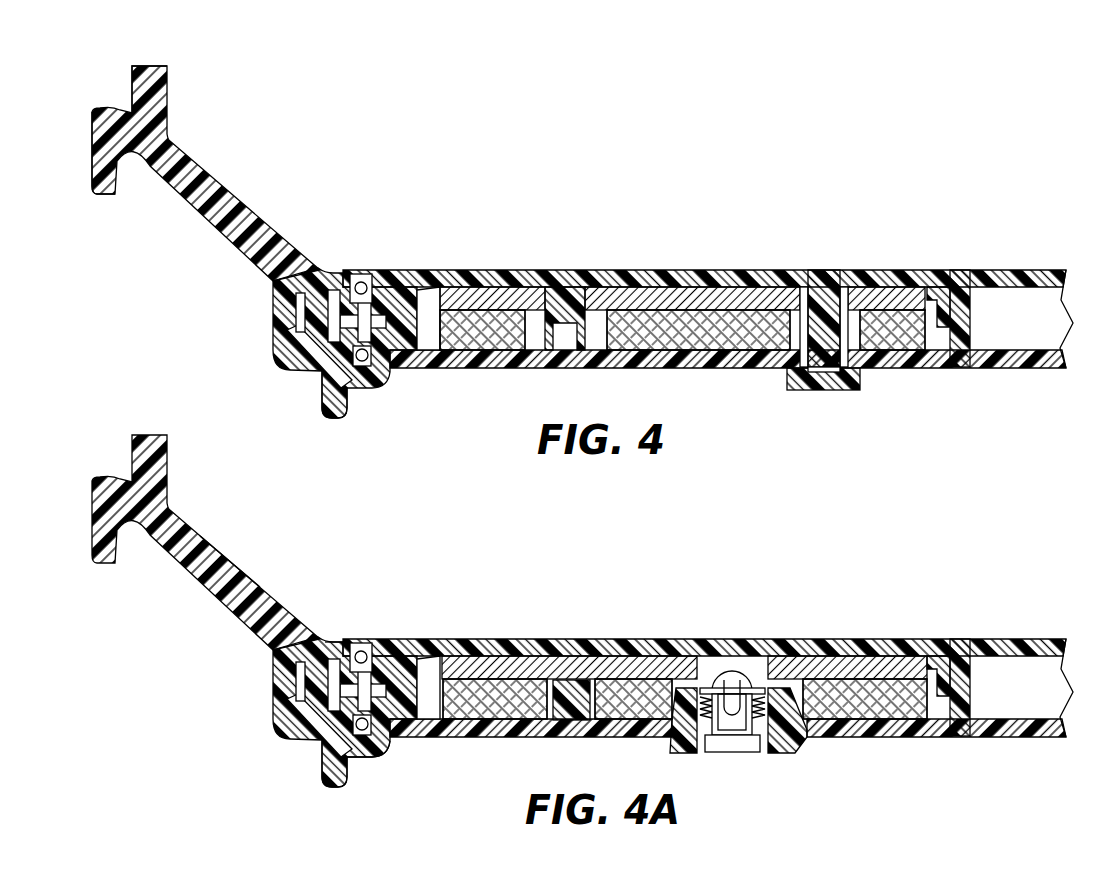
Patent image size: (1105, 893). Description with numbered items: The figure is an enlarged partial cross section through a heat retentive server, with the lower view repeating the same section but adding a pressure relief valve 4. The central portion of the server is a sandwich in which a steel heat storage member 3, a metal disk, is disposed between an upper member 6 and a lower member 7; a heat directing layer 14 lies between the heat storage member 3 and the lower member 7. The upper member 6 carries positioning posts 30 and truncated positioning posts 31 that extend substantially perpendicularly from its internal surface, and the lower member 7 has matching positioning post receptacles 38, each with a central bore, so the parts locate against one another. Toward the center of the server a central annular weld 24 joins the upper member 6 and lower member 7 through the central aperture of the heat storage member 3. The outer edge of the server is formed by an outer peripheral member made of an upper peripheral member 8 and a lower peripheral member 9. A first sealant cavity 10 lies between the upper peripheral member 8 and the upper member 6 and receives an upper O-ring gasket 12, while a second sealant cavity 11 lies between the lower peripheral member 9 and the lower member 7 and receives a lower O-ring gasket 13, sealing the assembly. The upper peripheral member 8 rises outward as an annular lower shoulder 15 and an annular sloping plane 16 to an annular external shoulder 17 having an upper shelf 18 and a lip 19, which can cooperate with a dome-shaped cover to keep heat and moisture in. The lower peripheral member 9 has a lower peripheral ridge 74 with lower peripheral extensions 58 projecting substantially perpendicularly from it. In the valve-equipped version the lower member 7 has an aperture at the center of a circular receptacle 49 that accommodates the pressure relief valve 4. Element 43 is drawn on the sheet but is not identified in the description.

In FIG. 4, the heat storage member 3 is at (500, 292).
In FIG. 4A, the heat storage member 3 is at (688, 622).
In FIG. 4A, the pressure relief valve 4 is at (732, 732).
In FIG. 4, the upper member 6 is at (716, 271).
In FIG. 4A, the upper member 6 is at (704, 608).
In FIG. 4, the lower member 7 is at (690, 370).
In FIG. 4A, the lower member 7 is at (728, 765).
In FIG. 4, the upper peripheral member 8 is at (176, 133).
In FIG. 4A, the upper peripheral member 8 is at (206, 561).
In FIG. 4, the lower peripheral member 9 is at (290, 376).
In FIG. 4A, the lower peripheral member 9 is at (315, 721).
In FIG. 4, the first sealant cavity 10 is at (368, 282).
In FIG. 4, the second sealant cavity 11 is at (364, 366).
In FIG. 4, the upper O-ring gasket 12 is at (358, 275).
In FIG. 4, the lower O-ring gasket 13 is at (359, 384).
In FIG. 4, the heat directing layer 14 is at (742, 345).
In FIG. 4A, the heat directing layer 14 is at (685, 653).
In FIG. 4A, the annular lower shoulder 15 is at (351, 608).
In FIG. 4A, the annular sloping plane 16 is at (244, 549).
In FIG. 4, the annular external shoulder 17 is at (88, 160).
In FIG. 4, the upper shelf 18 is at (105, 106).
In FIG. 4, the lip 19 is at (156, 66).
In FIG. 4, the central annular weld 24 is at (955, 285).
In FIG. 4, the positioning posts 30 is at (822, 300).
In FIG. 4, the truncated positioning posts 31 is at (568, 292).
In FIG. 4, the positioning post receptacles 38 is at (868, 345).
In FIG. 4, the mounting block 43 is at (822, 392).
In FIG. 4A, the receptacle 49 is at (751, 739).
In FIG. 4, the lower peripheral extensions 58 is at (333, 422).
In FIG. 4A, the lower peripheral extensions 58 is at (316, 792).
In FIG. 4A, the lower peripheral ridge 74 is at (380, 780).